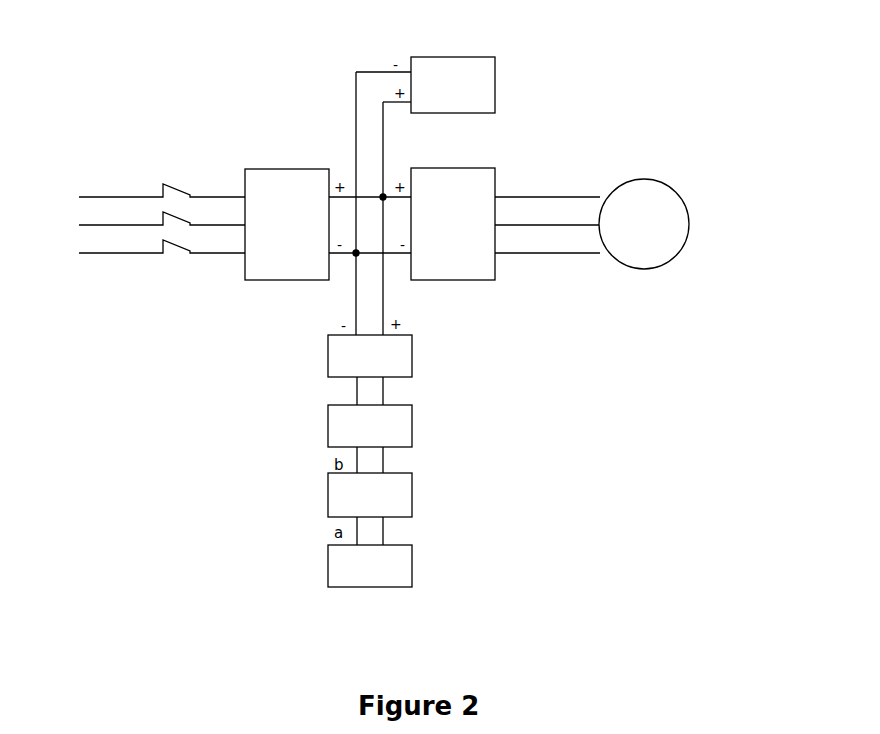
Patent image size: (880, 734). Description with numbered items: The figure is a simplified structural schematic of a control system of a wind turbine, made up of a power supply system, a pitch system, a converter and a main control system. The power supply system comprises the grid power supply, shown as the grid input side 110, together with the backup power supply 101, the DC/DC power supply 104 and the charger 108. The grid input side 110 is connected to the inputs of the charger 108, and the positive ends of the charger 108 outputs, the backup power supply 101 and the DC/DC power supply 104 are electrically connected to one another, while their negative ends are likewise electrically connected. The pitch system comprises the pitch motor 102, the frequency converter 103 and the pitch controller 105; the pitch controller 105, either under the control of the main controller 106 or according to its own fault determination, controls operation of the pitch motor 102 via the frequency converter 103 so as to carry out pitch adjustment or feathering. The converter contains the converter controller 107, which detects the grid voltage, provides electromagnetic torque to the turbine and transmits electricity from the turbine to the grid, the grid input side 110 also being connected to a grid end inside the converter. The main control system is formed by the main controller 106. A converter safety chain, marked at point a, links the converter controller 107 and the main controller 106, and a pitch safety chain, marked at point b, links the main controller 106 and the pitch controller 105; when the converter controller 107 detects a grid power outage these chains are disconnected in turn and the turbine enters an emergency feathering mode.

The backup power supply 101 is at (465, 113).
The pitch motor 102 is at (643, 270).
The frequency converter 103 is at (455, 281).
The direct current to direct current (DC/DC) power supply 104 is at (412, 352).
The pitch controller 105 is at (412, 422).
The main controller 106 is at (412, 492).
The converter controller 107 is at (412, 565).
The charger 108 is at (278, 283).
The grid input side 110 is at (141, 218).